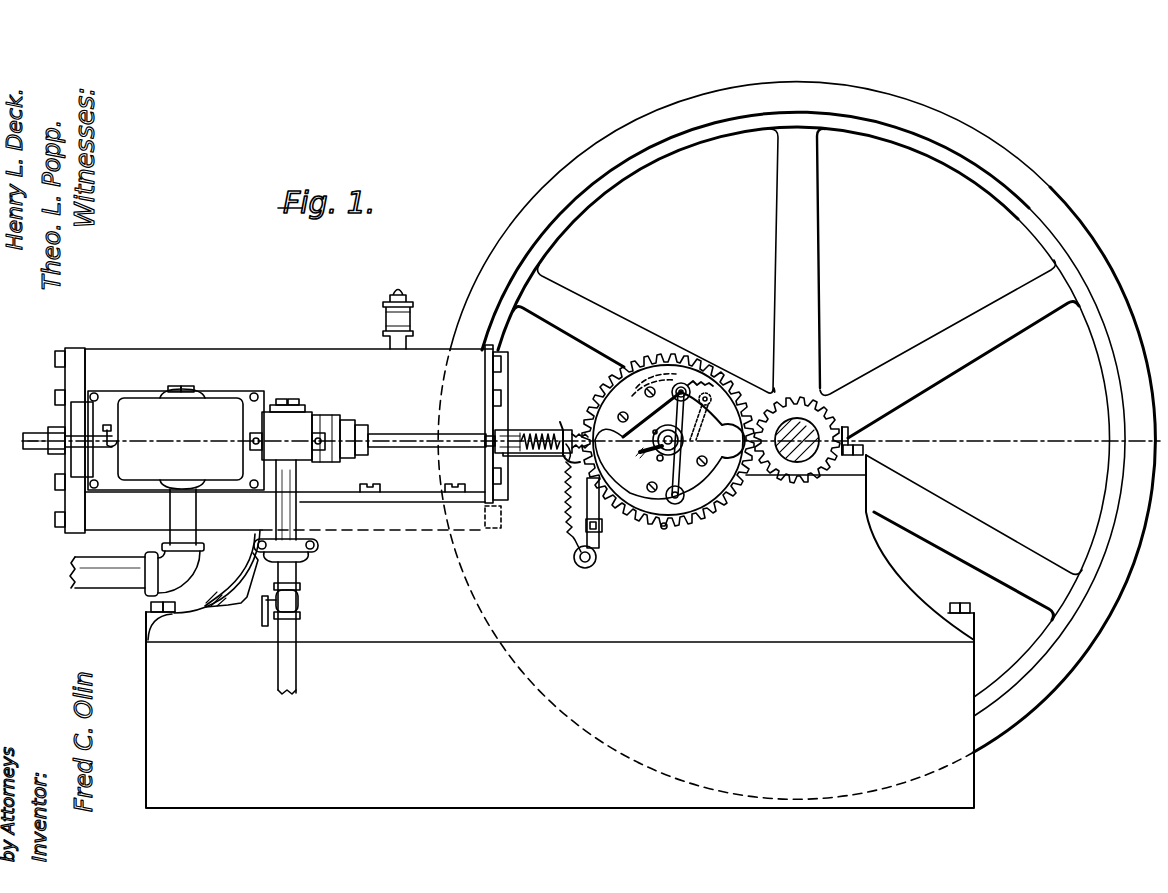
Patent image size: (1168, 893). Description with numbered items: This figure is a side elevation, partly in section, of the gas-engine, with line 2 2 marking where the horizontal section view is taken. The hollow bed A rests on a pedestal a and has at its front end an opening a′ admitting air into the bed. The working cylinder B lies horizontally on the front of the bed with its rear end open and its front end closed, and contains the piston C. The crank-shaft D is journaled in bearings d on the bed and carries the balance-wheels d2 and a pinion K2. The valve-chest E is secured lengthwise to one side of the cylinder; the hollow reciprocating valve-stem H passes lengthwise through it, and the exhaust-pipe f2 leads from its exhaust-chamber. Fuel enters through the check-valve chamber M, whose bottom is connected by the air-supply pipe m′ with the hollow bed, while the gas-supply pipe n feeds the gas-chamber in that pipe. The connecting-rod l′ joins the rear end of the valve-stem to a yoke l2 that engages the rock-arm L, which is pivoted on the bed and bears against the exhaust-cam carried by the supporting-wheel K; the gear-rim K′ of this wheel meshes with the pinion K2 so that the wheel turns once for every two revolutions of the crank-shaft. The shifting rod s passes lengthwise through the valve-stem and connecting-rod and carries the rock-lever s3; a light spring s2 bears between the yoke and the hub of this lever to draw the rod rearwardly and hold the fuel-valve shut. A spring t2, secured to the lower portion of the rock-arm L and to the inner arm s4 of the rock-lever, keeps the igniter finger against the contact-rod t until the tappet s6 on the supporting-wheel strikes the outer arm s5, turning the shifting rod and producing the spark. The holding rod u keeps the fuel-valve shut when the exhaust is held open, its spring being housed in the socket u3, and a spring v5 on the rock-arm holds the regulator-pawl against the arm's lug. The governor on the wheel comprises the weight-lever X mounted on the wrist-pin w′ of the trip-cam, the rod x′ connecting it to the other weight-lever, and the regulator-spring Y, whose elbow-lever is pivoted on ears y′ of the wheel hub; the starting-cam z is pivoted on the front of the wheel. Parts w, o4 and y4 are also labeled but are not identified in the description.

The section line 2 is at (584, 443).
The balance-wheels d2 is at (796, 440).
The pinion K2 is at (790, 483).
The crank-shaft D is at (815, 428).
The bearings d is at (856, 433).
The hollow bed A is at (560, 705).
The pedestal a is at (560, 735).
The opening a′ is at (229, 593).
The working cylinder B is at (293, 410).
The piston C is at (501, 382).
The stuffing box w is at (78, 418).
The socket u3 is at (67, 434).
The contact-rod t is at (109, 426).
The valve-chest E is at (176, 438).
The check-valve chamber M is at (287, 436).
The valve cap o4 is at (303, 411).
The hollow valve-stem H is at (349, 430).
The connecting-rod l′ is at (427, 427).
The air-supply pipe m′ is at (302, 517).
The gas-supply pipe n is at (286, 628).
The exhaust-pipe f2 is at (137, 542).
The yoke l2 is at (512, 430).
The rock-lever s3 is at (552, 449).
The inner arm s4 is at (561, 429).
The outer arm s5 is at (565, 458).
The shifting rod s is at (530, 440).
The light spring s2 is at (545, 452).
The spring t2 is at (564, 507).
The rock-arm L is at (600, 554).
The spring v5 is at (602, 529).
The gear-rim K′ is at (740, 492).
The supporting-wheel K is at (656, 439).
The regulator-spring Y is at (658, 464).
The centrifugal weight-lever X is at (714, 425).
The rod x′ is at (636, 478).
The wrist-pin w′ is at (681, 389).
The starting-cam z is at (712, 462).
The ears y′ is at (647, 445).
The pin y4 is at (665, 467).
The holding rod u is at (652, 425).
The tappet s6 is at (664, 529).